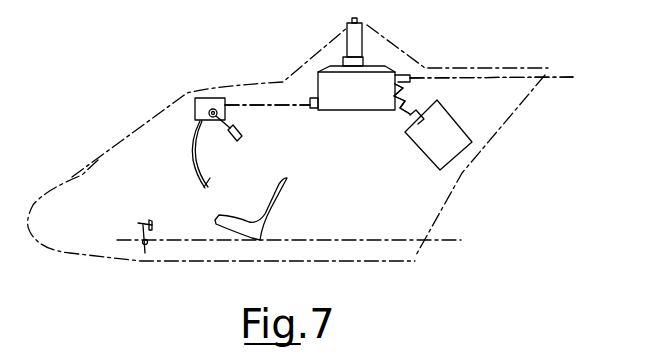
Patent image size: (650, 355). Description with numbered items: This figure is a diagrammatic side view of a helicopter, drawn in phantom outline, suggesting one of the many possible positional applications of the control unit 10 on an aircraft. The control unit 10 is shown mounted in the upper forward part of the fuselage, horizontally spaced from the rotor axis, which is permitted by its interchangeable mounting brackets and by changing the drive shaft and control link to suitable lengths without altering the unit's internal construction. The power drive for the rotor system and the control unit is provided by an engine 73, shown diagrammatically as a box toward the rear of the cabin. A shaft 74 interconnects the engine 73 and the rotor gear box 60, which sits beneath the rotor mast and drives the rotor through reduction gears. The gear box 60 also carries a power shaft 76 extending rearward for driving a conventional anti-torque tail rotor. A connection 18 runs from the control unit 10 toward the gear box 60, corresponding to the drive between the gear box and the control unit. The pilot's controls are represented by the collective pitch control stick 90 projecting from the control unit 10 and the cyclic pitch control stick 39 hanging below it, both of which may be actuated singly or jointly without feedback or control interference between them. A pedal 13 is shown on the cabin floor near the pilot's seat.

The control unit 10 is at (212, 97).
The pedal 13 is at (140, 242).
The connecting line 18 is at (292, 106).
The cyclic pitch control stick 39 is at (198, 161).
The rotor gear box 60 is at (365, 106).
The engine 73 is at (447, 133).
The shaft 74 is at (416, 103).
The power shaft 76 is at (565, 72).
The collective pitch control stick 90 is at (230, 124).